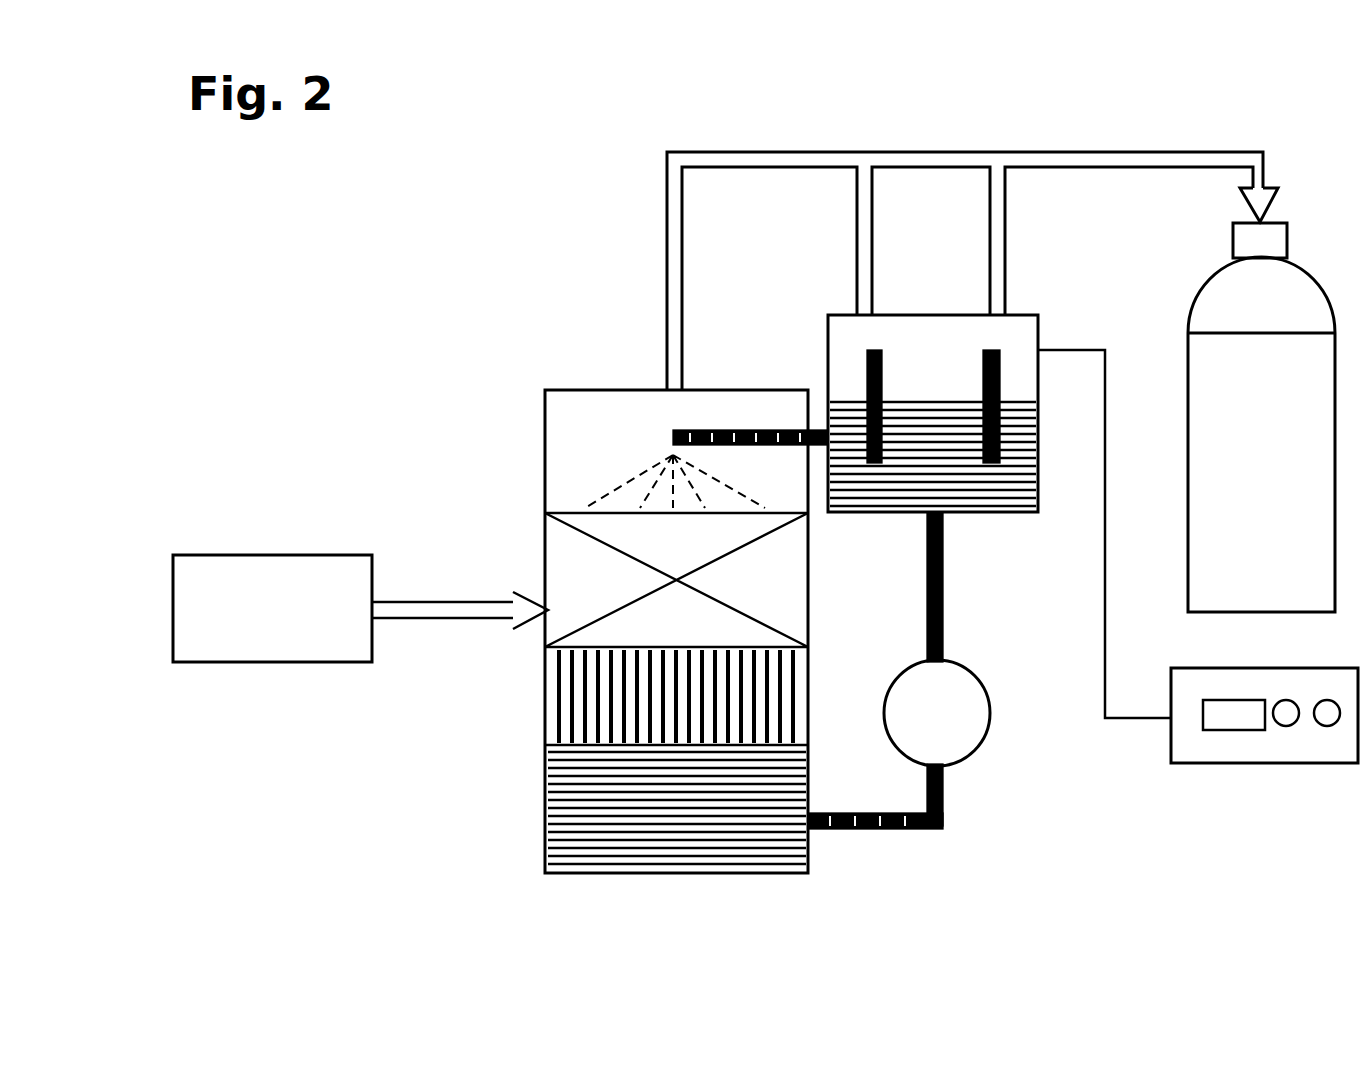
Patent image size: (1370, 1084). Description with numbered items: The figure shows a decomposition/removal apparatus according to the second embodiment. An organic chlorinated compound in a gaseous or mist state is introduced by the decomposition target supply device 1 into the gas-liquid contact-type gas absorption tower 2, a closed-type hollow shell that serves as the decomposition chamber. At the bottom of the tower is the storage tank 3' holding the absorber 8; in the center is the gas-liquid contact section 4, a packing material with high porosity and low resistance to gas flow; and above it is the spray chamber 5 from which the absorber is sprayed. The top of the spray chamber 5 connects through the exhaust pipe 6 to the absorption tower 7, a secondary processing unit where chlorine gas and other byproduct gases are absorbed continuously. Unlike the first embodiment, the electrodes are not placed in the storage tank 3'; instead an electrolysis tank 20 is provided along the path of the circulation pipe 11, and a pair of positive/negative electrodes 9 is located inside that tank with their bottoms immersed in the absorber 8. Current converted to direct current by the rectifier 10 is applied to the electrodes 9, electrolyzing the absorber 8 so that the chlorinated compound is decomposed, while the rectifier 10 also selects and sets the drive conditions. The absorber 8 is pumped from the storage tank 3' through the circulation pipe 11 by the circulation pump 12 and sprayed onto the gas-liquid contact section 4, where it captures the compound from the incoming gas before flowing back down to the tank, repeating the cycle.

The decomposition target supply device 1 is at (265, 662).
The gas-liquid contact-type gas absorption tower 2 is at (560, 382).
The storage tank 3' is at (628, 741).
The gas-liquid contact section 4 is at (545, 556).
The spray chamber 5 is at (597, 430).
The exhaust pipe 6 is at (797, 168).
The absorption tower 7 is at (1200, 416).
The absorber 8 is at (688, 823).
The positive/negative electrodes 9 is at (862, 362).
The rectifier 10 is at (1258, 750).
The circulation pipe 11 is at (943, 605).
The circulation pump 12 is at (970, 710).
The electrolysis tank 20 is at (1033, 512).